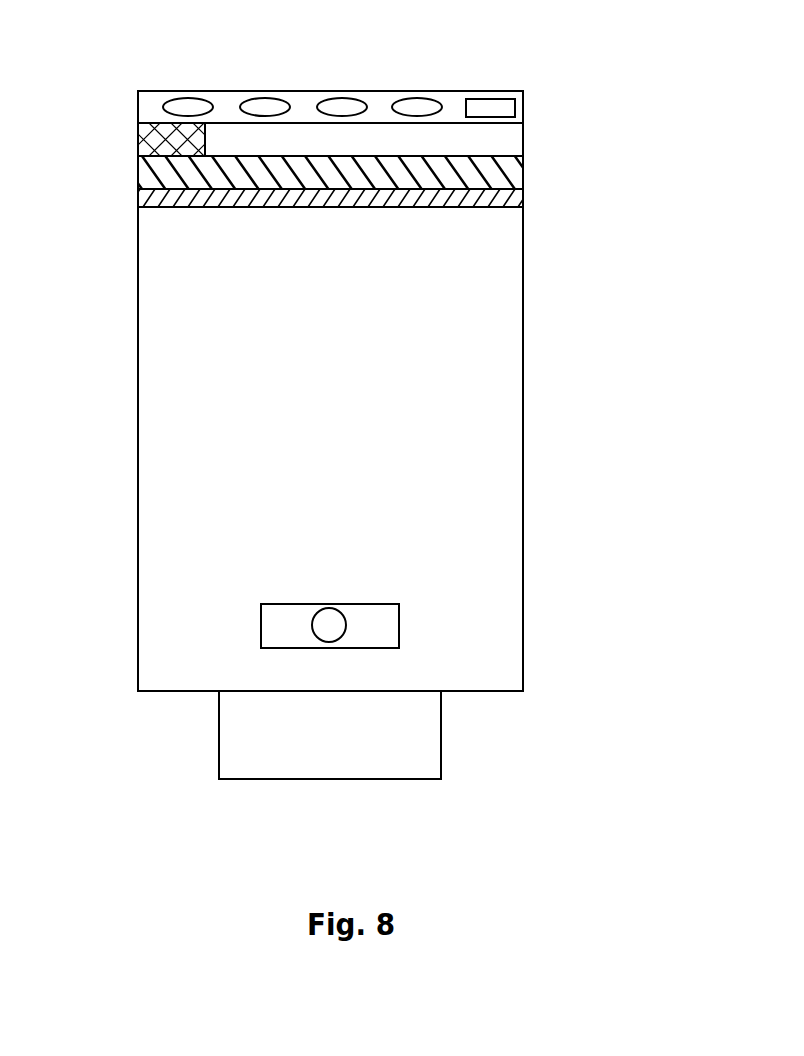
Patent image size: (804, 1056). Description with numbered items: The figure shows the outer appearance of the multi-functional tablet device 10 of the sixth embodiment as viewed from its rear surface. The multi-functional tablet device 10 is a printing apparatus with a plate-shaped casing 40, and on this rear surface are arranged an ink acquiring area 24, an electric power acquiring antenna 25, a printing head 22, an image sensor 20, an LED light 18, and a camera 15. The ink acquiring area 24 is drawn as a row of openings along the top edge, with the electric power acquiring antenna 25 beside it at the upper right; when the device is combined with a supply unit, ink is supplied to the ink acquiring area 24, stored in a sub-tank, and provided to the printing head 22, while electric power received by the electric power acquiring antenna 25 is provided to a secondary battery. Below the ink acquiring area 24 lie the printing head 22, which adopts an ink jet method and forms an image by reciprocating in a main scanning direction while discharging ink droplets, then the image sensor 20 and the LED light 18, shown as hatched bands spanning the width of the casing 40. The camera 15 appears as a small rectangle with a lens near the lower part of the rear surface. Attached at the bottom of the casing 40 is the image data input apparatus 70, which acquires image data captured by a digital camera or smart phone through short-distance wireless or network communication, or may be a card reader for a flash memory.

The multi-functional tablet device 10 is at (371, 449).
The camera 15 is at (256, 628).
The LED light 18 is at (136, 199).
The image sensor 20 is at (136, 168).
The printing head 22 is at (136, 131).
The ink acquiring area 24 is at (447, 87).
The electric power acquiring antenna 25 is at (490, 107).
The casing 40 is at (496, 675).
The image data input apparatus 70 is at (297, 786).